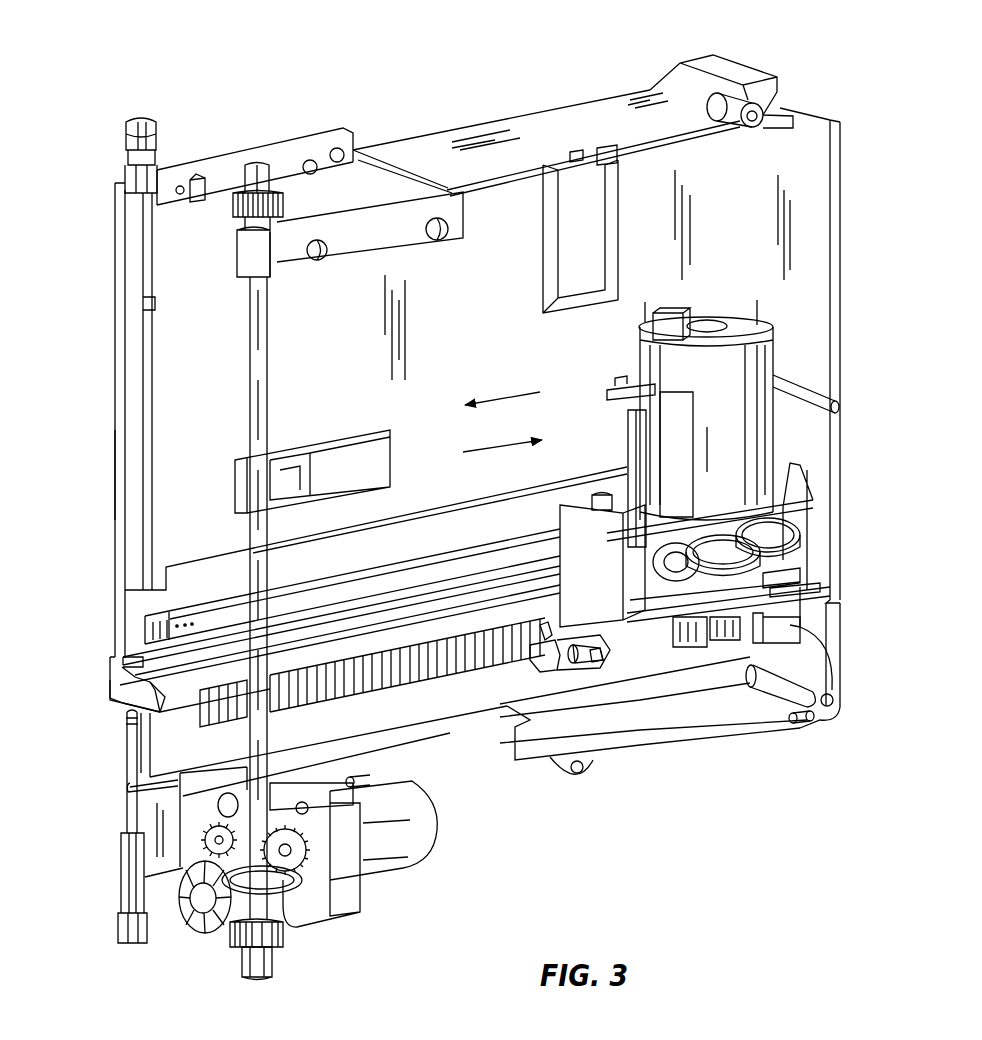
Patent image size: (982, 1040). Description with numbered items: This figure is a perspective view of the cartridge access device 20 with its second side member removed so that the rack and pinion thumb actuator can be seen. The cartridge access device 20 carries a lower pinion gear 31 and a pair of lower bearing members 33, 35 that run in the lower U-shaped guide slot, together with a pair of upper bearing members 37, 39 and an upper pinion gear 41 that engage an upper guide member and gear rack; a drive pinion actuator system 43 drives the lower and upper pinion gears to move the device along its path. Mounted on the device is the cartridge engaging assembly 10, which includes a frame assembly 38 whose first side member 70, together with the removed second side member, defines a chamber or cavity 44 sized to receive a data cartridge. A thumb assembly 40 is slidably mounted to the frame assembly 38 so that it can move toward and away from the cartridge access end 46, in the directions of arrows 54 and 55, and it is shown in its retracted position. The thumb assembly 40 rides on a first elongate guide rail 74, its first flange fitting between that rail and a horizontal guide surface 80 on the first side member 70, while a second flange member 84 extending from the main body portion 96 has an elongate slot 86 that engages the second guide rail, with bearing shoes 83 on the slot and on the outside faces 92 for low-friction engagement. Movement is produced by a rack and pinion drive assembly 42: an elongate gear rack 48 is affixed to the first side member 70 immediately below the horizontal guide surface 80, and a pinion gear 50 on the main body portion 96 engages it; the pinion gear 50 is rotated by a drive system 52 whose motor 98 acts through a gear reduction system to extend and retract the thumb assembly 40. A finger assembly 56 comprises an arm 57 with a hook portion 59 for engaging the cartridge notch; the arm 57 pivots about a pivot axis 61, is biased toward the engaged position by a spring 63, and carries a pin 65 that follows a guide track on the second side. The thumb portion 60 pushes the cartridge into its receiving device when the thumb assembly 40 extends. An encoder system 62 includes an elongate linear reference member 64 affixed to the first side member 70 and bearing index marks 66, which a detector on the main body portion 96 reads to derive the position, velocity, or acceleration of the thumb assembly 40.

The cartridge engaging assembly 10 is at (236, 57).
The cartridge access device 20 is at (112, 235).
The lower pinion gear 31 is at (230, 938).
The lower bearing member 33 is at (120, 918).
The lower bearing member 35 is at (268, 965).
The upper bearing member 37 is at (125, 172).
The frame assembly 38 is at (590, 100).
The upper bearing member 39 is at (243, 176).
The thumb assembly 40 is at (778, 433).
The upper pinion gear 41 is at (232, 212).
The rack and pinion drive assembly 42 is at (365, 700).
The drive pinion actuator system 43 is at (423, 838).
The chamber or cavity 44 is at (183, 353).
The cartridge access end 46 is at (115, 477).
The elongate gear rack 48 is at (228, 733).
The pinion gear 50 is at (753, 613).
The drive system 52 is at (813, 473).
The arrow 54 is at (537, 390).
The arrow 55 is at (480, 447).
The finger assembly 56 is at (560, 673).
The arm 57 is at (620, 653).
The hook portion 59 is at (545, 625).
The thumb portion 60 is at (600, 589).
The pivot axis 61 is at (860, 618).
The encoder system 62 is at (417, 557).
The spring 63 is at (628, 458).
The elongate linear reference member 64 is at (228, 598).
The pin 65 is at (598, 660).
The index marks 66 is at (150, 628).
The first side member 70 is at (478, 123).
The first elongate guide rail 74 is at (130, 676).
The horizontal guide surface 80 is at (125, 705).
The bearing shoes 83 is at (813, 590).
The second flange member 84 is at (810, 540).
The elongate slot 86 is at (827, 580).
The outside faces 92 is at (820, 587).
The main body portion 96 is at (807, 627).
The motor 98 is at (775, 355).